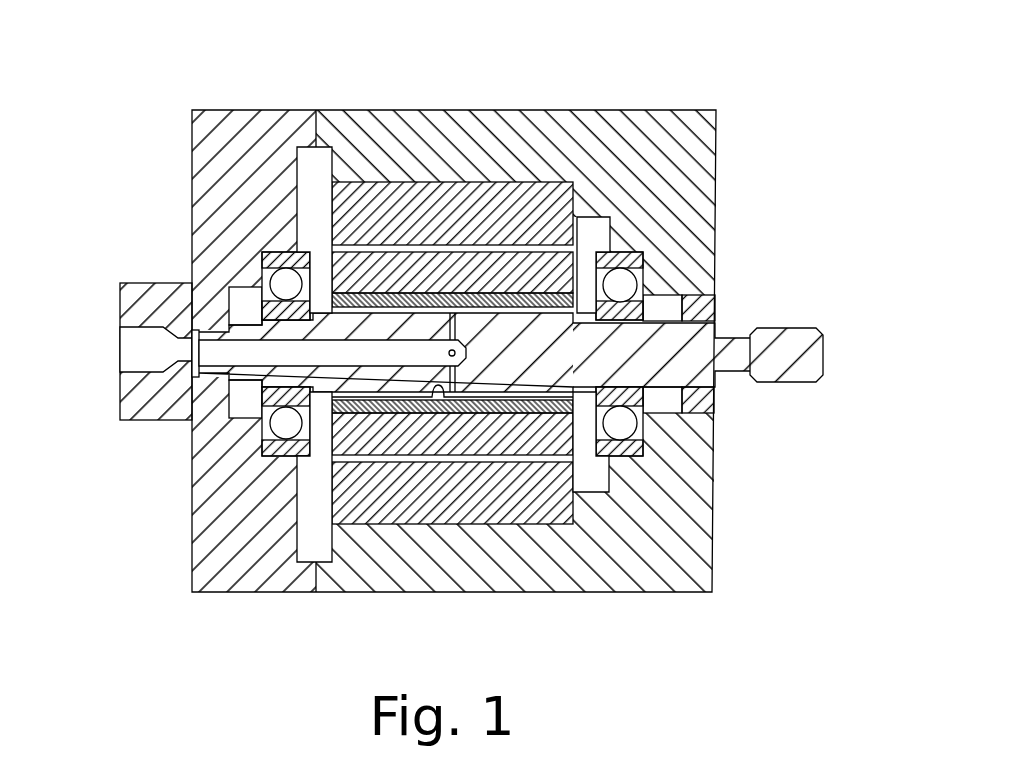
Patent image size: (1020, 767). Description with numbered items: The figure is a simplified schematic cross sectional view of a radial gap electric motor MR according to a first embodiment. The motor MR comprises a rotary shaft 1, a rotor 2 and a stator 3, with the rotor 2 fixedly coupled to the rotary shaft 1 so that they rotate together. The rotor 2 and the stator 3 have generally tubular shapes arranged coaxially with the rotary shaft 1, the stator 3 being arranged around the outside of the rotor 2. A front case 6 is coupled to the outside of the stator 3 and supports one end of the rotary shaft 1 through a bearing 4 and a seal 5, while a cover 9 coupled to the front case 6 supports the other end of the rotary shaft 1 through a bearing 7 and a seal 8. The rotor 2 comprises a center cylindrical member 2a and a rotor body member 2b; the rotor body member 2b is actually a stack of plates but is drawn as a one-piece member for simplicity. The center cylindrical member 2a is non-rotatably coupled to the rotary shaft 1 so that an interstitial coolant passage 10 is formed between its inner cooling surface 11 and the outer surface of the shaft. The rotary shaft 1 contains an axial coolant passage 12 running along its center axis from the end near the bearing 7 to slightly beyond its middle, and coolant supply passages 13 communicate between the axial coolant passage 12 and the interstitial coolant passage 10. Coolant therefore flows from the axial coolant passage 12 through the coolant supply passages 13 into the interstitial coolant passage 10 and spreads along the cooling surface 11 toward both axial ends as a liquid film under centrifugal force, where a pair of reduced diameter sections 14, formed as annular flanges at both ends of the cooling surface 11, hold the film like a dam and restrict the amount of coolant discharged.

The radial gap electric motor MR is at (761, 80).
The rotary shaft 1 is at (800, 328).
The rotor 2 is at (552, 322).
The center cylindrical member 2a is at (487, 353).
The rotor body member 2b is at (470, 299).
The stator 3 is at (525, 188).
The bearing 4 is at (690, 262).
The seal 5 is at (712, 307).
The front case 6 is at (713, 505).
The bearing 7 is at (277, 284).
The seal 8 is at (208, 318).
The cover 9 is at (120, 397).
The interstitial coolant passage 10 is at (407, 398).
The cooling surface 11 is at (432, 397).
The axial coolant passage 12 is at (224, 357).
The coolant supply passages 13 is at (455, 313).
The reduced diameter sections 14 is at (327, 312).